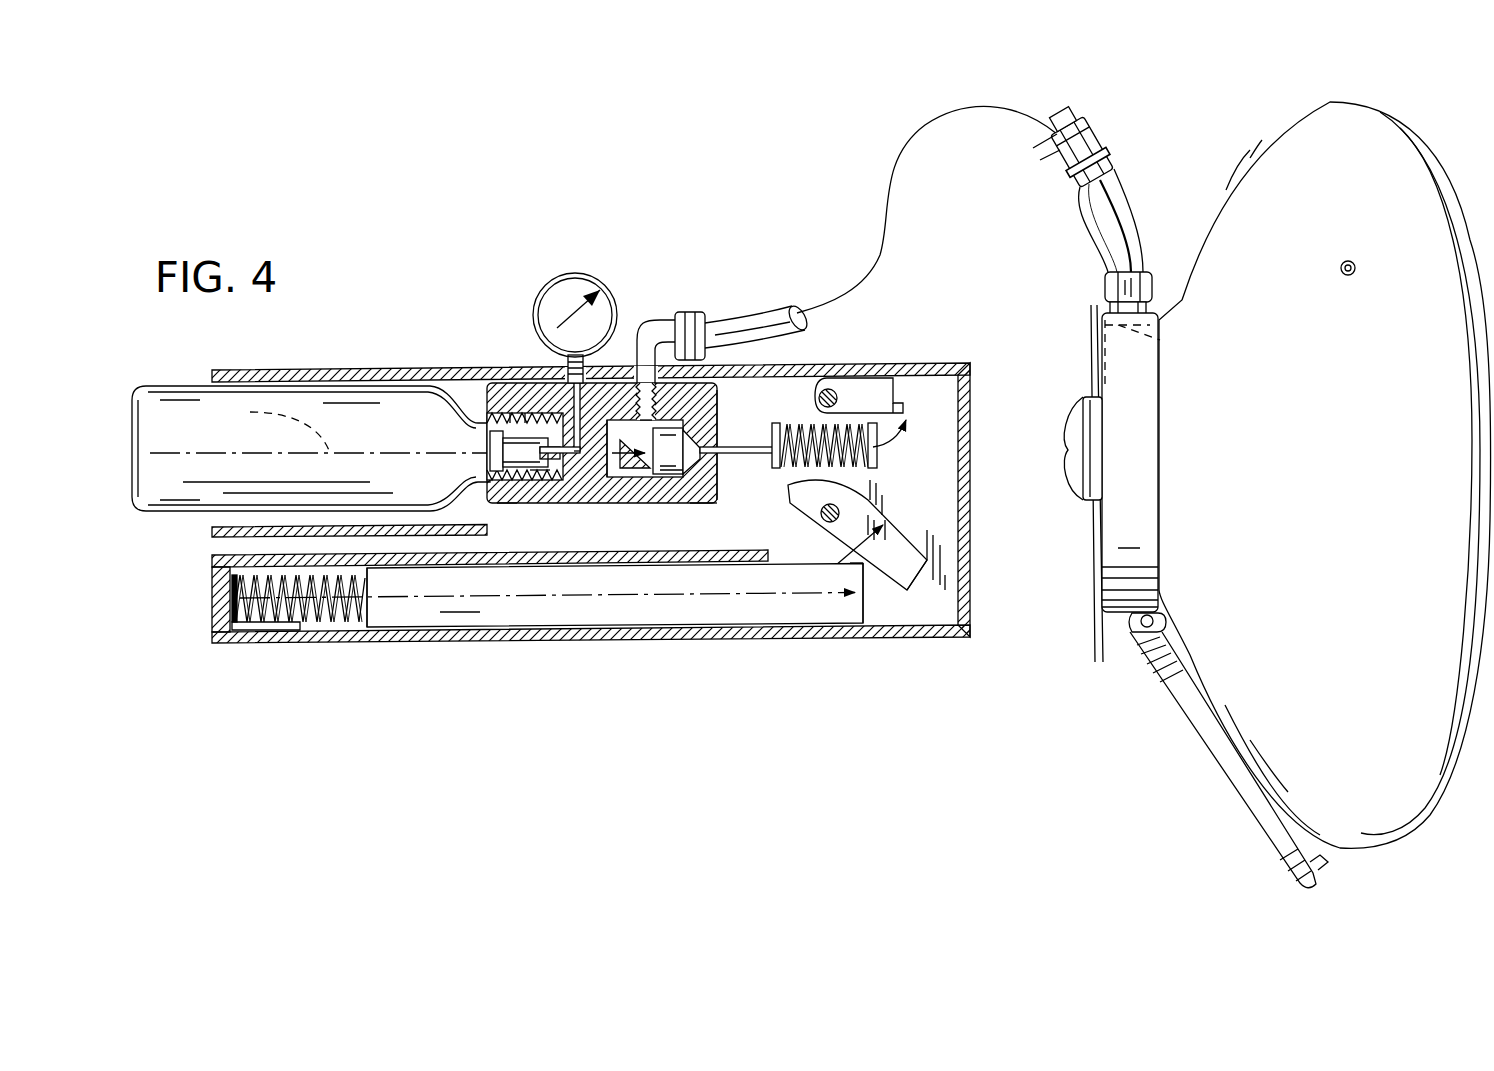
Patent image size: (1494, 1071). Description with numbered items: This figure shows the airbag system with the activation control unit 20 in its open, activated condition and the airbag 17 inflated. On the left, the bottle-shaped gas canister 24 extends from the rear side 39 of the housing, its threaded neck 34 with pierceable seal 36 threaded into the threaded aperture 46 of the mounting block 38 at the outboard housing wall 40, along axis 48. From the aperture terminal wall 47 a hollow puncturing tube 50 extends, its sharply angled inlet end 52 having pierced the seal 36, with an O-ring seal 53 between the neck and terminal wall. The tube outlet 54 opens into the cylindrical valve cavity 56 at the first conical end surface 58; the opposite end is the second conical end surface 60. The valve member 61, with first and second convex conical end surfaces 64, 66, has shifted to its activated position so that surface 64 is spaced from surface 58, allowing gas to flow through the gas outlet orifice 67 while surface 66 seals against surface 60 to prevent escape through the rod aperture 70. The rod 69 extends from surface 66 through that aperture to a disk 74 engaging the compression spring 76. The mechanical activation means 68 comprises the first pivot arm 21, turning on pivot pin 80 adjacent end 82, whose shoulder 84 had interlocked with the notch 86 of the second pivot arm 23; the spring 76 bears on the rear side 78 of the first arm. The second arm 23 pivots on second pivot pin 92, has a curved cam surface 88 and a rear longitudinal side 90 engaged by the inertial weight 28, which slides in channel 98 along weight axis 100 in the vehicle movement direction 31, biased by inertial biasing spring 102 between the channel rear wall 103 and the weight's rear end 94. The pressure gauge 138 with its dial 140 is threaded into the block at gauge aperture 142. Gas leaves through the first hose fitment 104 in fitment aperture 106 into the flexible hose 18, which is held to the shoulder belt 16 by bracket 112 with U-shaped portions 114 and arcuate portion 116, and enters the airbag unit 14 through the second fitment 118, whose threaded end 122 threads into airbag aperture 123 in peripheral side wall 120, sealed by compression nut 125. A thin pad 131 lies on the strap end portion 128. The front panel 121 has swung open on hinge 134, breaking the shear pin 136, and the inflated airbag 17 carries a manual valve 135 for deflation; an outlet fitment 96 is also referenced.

The airbag unit 14 is at (1117, 620).
The shoulder belt 16 is at (1094, 233).
The airbag 17 is at (1424, 136).
The flexible hose 18 is at (1134, 192).
The activation control unit 20 is at (407, 644).
The first pivot arm 21 is at (900, 380).
The second pivot arm 23 is at (904, 525).
The gas canister 24 is at (462, 384).
The inertial weight 28 is at (541, 612).
The vehicle direction of movement 31 is at (822, 577).
The neck 34 is at (500, 457).
The pierceable seal 36 is at (503, 437).
The mounting block 38 is at (508, 506).
The rear side of the housing 39 is at (211, 594).
The outboard housing wall 40 is at (327, 370).
The threaded aperture 46 is at (527, 414).
The terminal wall 47 is at (540, 484).
The axis 48 is at (271, 427).
The puncturing tube 50 is at (492, 484).
The inlet end 52 is at (555, 462).
The O-ring seal 53 is at (574, 420).
The outlet 54 is at (572, 470).
The valve cavity 56 is at (630, 468).
The first conical end surface 58 is at (595, 455).
The second conical end surface 60 is at (668, 456).
The valve member 61 is at (630, 467).
The first valve end surface 64 is at (640, 404).
The second valve end surface 66 is at (717, 405).
The gas outlet orifice 67 is at (655, 398).
The mechanical activation means 68 is at (900, 449).
The rod 69 is at (742, 446).
The rod aperture 70 is at (697, 455).
The disk 74 is at (772, 457).
The compression spring 76 is at (798, 424).
The rear side of the first arm 78 is at (880, 447).
The pivot pin 80 is at (827, 392).
The end of the first arm 82 is at (851, 380).
The shoulder 84 is at (897, 394).
The notch 86 is at (787, 502).
The cam surface 88 is at (832, 479).
The rear longitudinal side 90 is at (887, 583).
The second pivot pin 92 is at (840, 513).
The rear end of the inertial weight 94 is at (358, 622).
The outlet fitment 96 is at (888, 590).
The channel 98 is at (462, 618).
The weight axis 100 is at (624, 598).
The inertial biasing spring 102 is at (305, 617).
The channel rear wall 103 is at (242, 632).
The first hose fitment 104 is at (646, 332).
The fitment aperture 106 is at (690, 312).
The bracket 112 is at (1099, 136).
The U-shaped portions 114 is at (1064, 177).
The arcuate bracket portion 116 is at (1106, 148).
The second fitment 118 is at (1154, 274).
The peripheral side wall 120 is at (1142, 480).
The front panel 121 is at (1207, 747).
The threaded end 122 is at (1150, 316).
The airbag aperture 123 is at (1160, 340).
The compression nut 125 is at (1152, 292).
The strap end portion 128 is at (1082, 420).
The thin pad 131 is at (1073, 472).
The hinge 134 is at (1154, 622).
The manual valve 135 is at (1356, 268).
The shear pin 136 is at (1327, 853).
The pressure sensing gauge 138 is at (540, 298).
The gauge dial 140 is at (572, 300).
The gauge aperture 142 is at (574, 358).